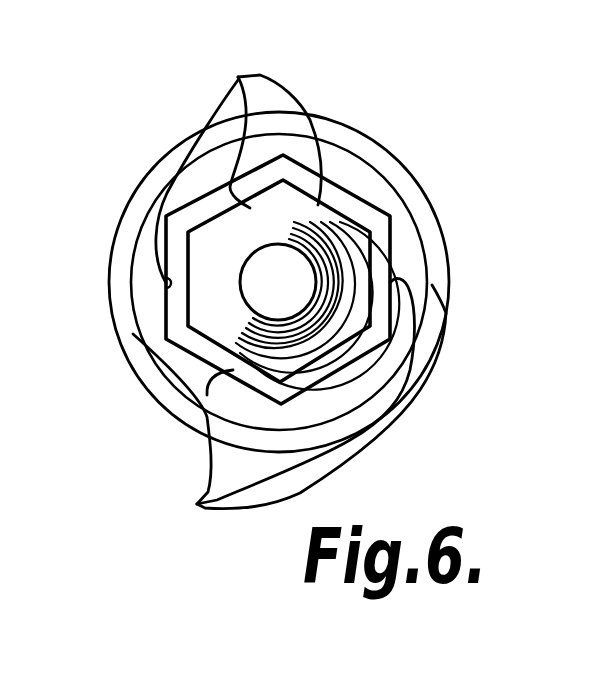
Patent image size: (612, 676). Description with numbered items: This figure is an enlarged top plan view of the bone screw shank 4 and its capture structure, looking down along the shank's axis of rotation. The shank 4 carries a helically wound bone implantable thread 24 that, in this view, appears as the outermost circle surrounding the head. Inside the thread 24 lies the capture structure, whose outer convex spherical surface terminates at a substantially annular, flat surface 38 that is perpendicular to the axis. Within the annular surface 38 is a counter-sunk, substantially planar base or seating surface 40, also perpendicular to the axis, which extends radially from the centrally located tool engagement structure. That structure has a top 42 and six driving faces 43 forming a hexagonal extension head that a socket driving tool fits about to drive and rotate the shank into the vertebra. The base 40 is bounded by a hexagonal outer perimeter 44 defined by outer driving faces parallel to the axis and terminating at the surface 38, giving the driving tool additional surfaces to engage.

The shank 4 is at (133, 334).
The bone implantable thread 24 is at (418, 179).
The annular surface 38 is at (368, 186).
The seating surface 40 is at (342, 205).
The top 42 is at (213, 320).
The driving faces 43 is at (289, 281).
The hexagonal outer perimeter 44 is at (164, 283).